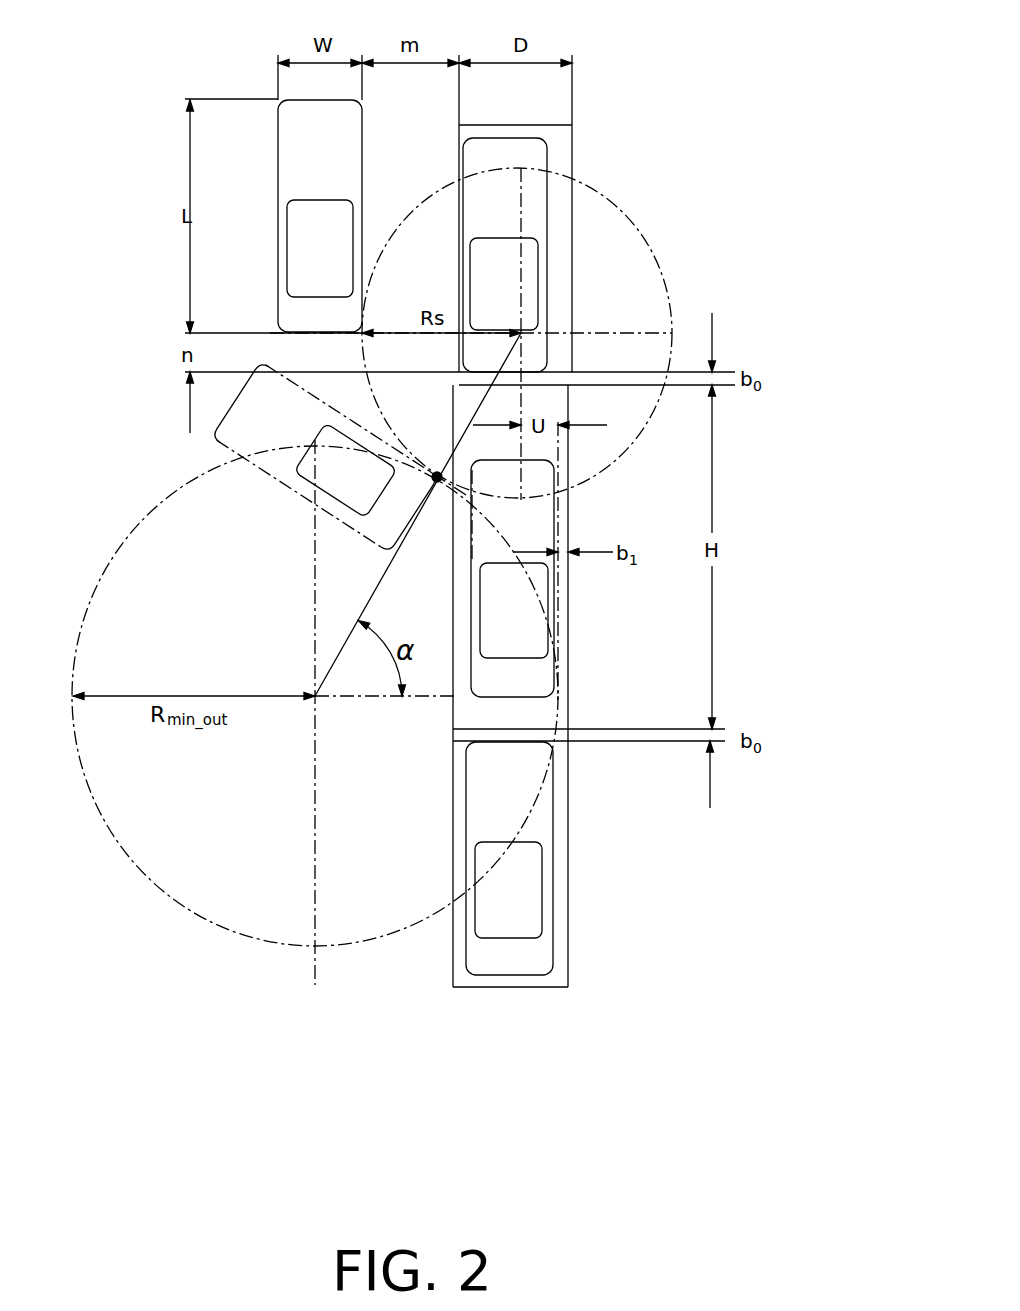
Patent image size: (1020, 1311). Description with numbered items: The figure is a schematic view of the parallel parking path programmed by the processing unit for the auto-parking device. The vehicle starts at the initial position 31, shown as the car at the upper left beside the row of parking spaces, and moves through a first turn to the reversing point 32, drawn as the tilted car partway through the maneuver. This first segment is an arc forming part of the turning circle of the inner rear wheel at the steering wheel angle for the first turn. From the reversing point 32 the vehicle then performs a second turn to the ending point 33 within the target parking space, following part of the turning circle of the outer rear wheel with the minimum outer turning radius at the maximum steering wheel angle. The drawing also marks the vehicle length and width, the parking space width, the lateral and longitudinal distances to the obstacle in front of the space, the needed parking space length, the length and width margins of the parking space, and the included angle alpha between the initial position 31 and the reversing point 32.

The initial position 31 is at (278, 171).
The reversing point 32 is at (210, 438).
The ending point 33 is at (570, 602).